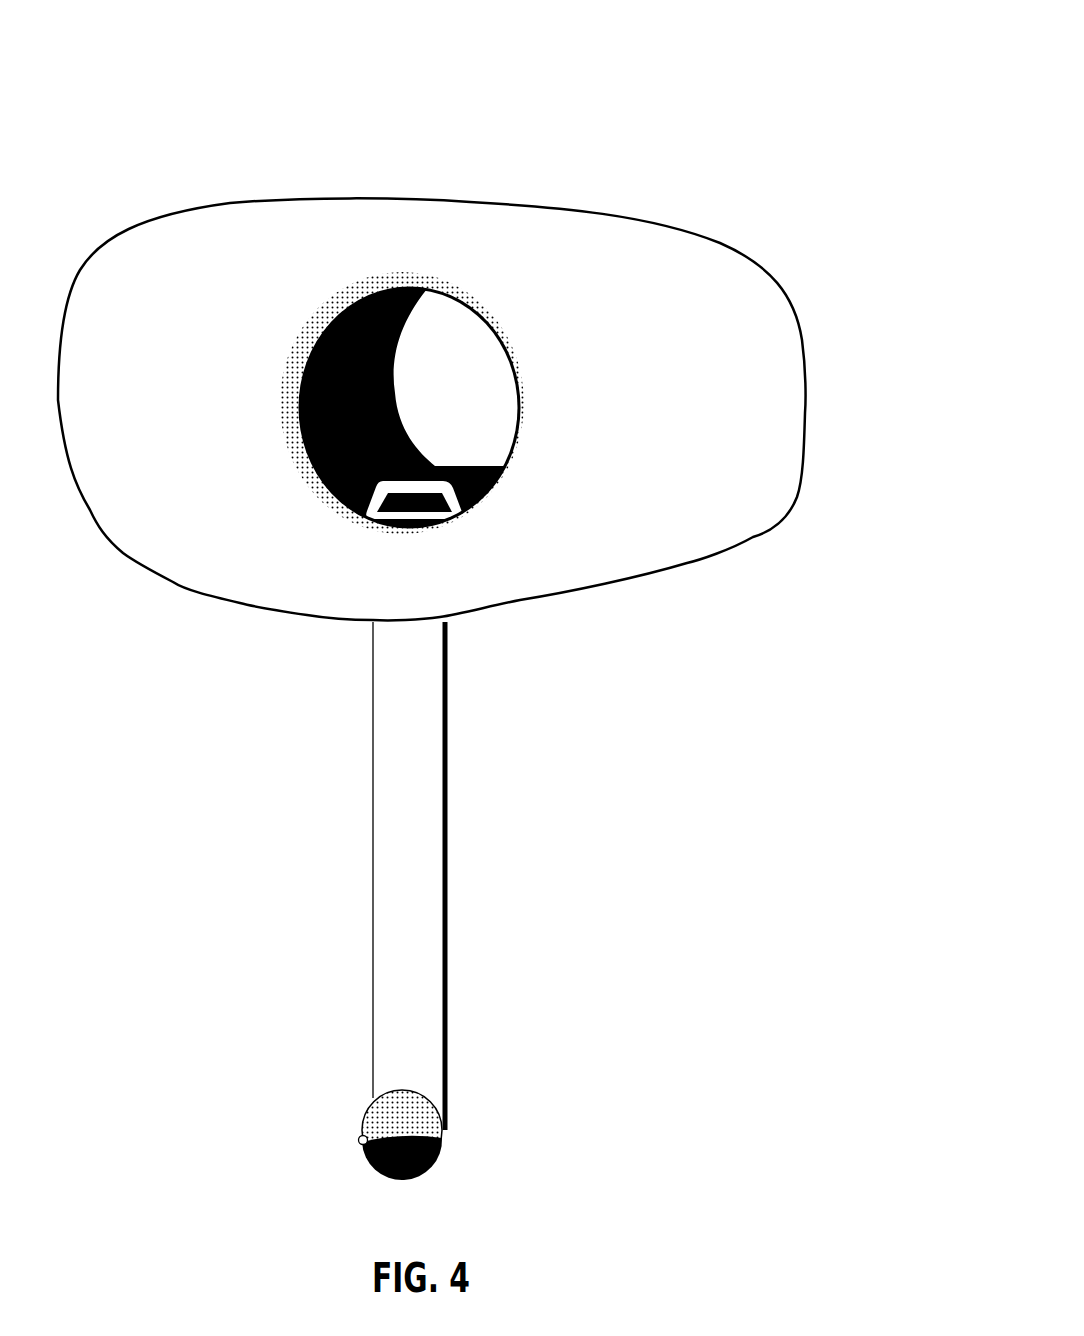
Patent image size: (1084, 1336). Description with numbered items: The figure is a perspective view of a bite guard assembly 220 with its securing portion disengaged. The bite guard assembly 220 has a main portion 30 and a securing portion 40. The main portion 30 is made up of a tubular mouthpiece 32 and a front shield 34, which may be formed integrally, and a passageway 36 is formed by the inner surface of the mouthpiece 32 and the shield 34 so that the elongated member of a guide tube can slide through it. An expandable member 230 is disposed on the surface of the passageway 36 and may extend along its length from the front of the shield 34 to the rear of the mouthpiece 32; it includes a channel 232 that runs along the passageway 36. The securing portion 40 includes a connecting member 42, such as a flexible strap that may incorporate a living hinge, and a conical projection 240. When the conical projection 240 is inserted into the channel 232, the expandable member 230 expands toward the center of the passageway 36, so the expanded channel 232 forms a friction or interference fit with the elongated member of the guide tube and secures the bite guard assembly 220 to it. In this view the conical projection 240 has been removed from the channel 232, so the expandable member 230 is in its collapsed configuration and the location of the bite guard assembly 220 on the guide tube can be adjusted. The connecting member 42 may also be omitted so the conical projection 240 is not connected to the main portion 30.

The bite guard assembly 220 is at (459, 600).
The main portion 30 is at (459, 355).
The tubular mouthpiece 32 is at (395, 390).
The front shield 34 is at (777, 271).
The passageway 36 is at (405, 345).
The expandable member 230 is at (467, 454).
The channel 232 is at (419, 500).
The securing portion 40 is at (434, 901).
The connecting member 42 is at (447, 905).
The conical projection 240 is at (375, 1119).